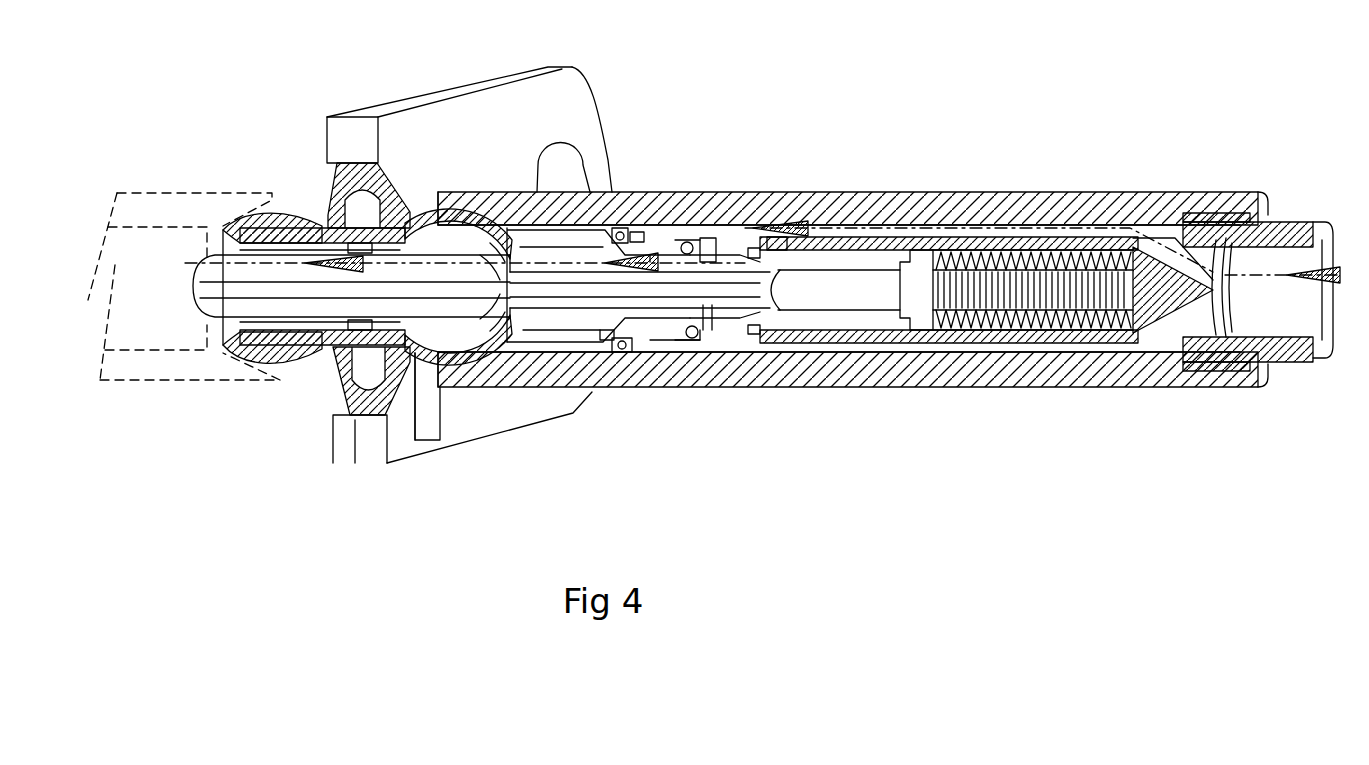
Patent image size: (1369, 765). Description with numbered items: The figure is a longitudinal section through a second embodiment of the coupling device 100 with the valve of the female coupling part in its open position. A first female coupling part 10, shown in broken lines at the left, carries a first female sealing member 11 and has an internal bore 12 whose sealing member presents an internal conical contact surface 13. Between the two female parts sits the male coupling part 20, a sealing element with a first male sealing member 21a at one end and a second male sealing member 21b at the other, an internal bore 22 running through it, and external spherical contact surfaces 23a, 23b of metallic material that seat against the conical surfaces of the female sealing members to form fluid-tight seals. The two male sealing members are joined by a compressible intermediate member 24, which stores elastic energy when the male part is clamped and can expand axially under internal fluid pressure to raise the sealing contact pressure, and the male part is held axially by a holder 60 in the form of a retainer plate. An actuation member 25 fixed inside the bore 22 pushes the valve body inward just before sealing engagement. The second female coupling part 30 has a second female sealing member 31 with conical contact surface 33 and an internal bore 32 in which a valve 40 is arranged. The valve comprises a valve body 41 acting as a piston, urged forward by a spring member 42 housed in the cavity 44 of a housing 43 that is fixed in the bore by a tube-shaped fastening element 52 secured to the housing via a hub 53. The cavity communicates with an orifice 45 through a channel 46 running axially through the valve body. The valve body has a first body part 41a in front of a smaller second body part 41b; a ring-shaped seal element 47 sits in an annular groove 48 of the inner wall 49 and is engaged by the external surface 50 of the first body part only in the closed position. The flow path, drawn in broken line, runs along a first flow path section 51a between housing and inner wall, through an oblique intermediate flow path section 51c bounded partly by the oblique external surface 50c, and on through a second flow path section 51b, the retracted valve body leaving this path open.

The coupling device 100 is at (276, 100).
The first female coupling part 10 is at (152, 180).
The first female sealing member 11 is at (220, 368).
The internal bore 12 is at (172, 230).
The internal conical contact surface 13 is at (223, 225).
The male coupling part 20 is at (316, 180).
The first male sealing member 21a is at (280, 368).
The second male sealing member 21b is at (413, 356).
The internal bore 22 is at (412, 235).
The external spherical contact surface 23a is at (262, 205).
The external spherical contact surface 23b is at (432, 210).
The intermediate member 24 is at (353, 418).
The actuation member 25 is at (487, 350).
The second female coupling part 30 is at (826, 170).
The second female sealing member 31 is at (477, 373).
The internal bore 32 is at (903, 212).
The internal conical contact surface 33 is at (480, 210).
The valve 40 is at (712, 220).
The valve body 41 is at (746, 316).
The first body part 41a is at (838, 320).
The second body part 41b is at (618, 352).
The spring member 42 is at (978, 330).
The housing 43 is at (1087, 337).
The cavity 44 is at (1040, 210).
The orifice 45 is at (552, 250).
The channel 46 is at (670, 292).
The ring-shaped seal element 47 is at (690, 240).
The annular groove 48 is at (668, 245).
The inner wall 49 is at (632, 243).
The external surface 50 is at (750, 245).
The external surface 50c is at (760, 334).
The first flow path section 51a is at (977, 215).
The second flow path section 51b is at (565, 250).
The intermediate flow path section 51c is at (738, 236).
The fastening element 52 is at (1293, 362).
The hub 53 is at (1208, 297).
The holder 60 is at (485, 82).